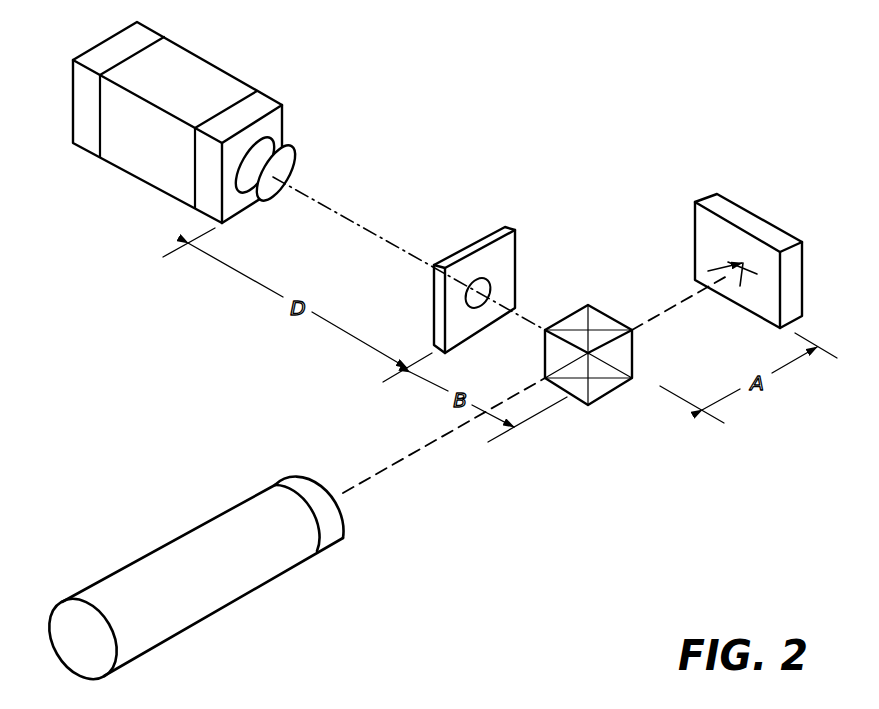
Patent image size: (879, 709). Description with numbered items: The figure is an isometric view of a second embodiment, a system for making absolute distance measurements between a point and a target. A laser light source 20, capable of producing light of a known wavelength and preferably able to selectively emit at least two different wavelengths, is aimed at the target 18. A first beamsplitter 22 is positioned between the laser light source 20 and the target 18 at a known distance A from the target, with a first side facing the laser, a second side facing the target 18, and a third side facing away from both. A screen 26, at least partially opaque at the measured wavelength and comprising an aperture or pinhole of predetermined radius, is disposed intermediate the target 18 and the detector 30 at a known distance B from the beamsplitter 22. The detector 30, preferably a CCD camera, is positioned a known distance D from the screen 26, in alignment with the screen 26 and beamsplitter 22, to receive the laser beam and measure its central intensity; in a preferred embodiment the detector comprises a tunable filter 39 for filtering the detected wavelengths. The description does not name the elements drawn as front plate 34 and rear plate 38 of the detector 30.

The target 18 is at (743, 220).
The laser light source 20 is at (105, 588).
The first beamsplitter 22 is at (602, 397).
The screen 26 is at (482, 242).
The detector 30 is at (140, 163).
The camera front plate 34 is at (208, 202).
The camera rear plate 38 is at (110, 50).
The tunable filter 39 is at (332, 530).